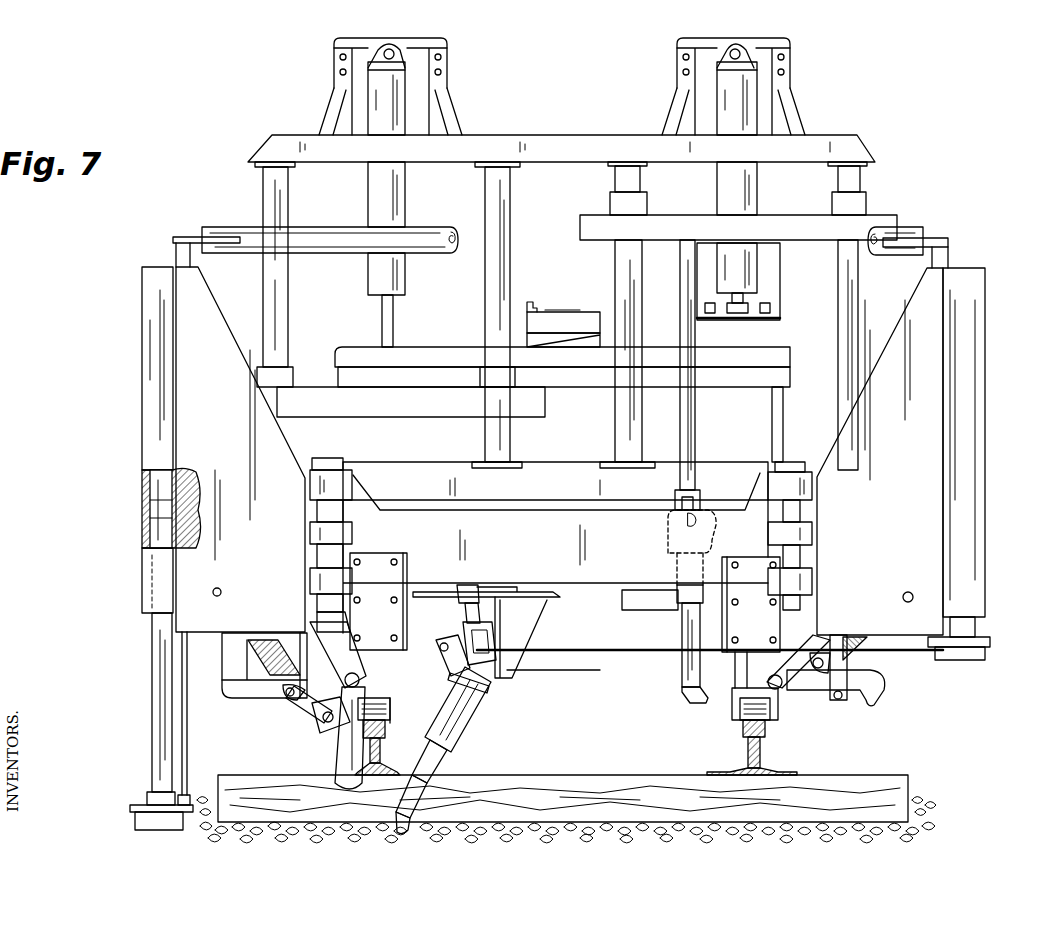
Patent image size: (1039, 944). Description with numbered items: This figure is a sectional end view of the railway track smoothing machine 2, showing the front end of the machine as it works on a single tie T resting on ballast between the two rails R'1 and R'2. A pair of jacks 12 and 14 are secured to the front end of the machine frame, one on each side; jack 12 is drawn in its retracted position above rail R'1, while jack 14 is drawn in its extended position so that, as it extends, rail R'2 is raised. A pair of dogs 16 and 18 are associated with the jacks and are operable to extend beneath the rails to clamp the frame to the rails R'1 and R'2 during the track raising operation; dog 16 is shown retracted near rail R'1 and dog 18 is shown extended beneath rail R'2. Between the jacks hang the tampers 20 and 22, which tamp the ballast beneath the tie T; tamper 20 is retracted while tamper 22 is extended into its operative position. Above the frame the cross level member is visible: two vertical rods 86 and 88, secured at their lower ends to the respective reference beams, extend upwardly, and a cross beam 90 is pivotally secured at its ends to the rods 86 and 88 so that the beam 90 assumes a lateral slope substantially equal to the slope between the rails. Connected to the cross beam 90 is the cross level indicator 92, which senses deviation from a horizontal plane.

The railway track smoothing machine 2 is at (868, 145).
The jack 12 is at (985, 344).
The jack 14 is at (143, 383).
The dog 16 is at (886, 684).
The dog 18 is at (335, 749).
The tamper 20 is at (681, 630).
The tamper 22 is at (471, 715).
The vertical rod 86 is at (338, 378).
The vertical rod 88 is at (783, 390).
The cross beam 90 is at (456, 347).
The cross level indicator 92 is at (586, 312).
The rail R'1 is at (761, 713).
The rail R'2 is at (389, 736).
The tie T is at (630, 775).